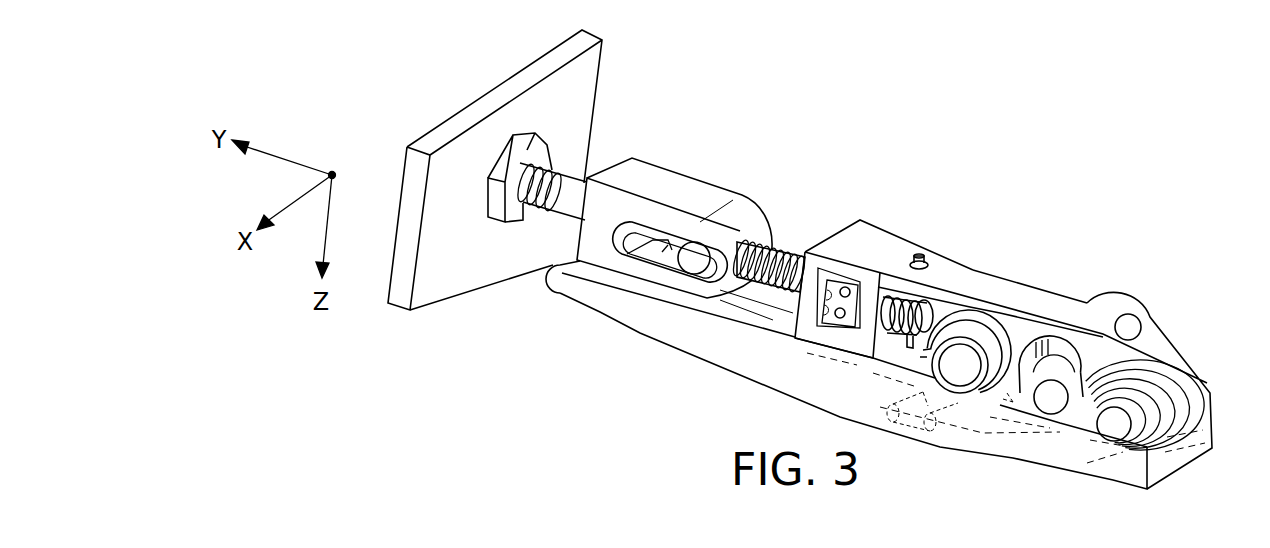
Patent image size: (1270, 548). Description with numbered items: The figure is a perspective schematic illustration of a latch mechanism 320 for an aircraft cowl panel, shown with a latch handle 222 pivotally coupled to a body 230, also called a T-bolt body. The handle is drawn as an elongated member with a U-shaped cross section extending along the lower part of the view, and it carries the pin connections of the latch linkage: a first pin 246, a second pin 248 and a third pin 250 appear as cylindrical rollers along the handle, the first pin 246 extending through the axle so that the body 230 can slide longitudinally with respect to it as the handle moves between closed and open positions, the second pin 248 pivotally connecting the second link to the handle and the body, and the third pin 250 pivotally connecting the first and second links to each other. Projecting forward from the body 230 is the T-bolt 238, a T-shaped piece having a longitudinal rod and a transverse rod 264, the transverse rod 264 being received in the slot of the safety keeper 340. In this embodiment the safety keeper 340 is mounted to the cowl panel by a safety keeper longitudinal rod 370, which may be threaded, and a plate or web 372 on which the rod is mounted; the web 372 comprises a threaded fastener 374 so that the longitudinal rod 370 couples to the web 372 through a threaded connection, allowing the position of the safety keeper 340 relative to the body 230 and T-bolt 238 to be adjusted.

The latch handle 222 is at (748, 377).
The body 230 is at (876, 234).
The T-bolt 238 is at (778, 253).
The first pin 246 is at (980, 342).
The second pin 248 is at (1115, 425).
The third pin 250 is at (1053, 388).
The transverse rod 264 is at (697, 258).
The tensioning assembly 320 is at (960, 160).
The safety keeper 340 is at (692, 193).
The safety keeper longitudinal rod 370 is at (567, 200).
The web 372 is at (449, 133).
The threaded fastener 374 is at (512, 155).